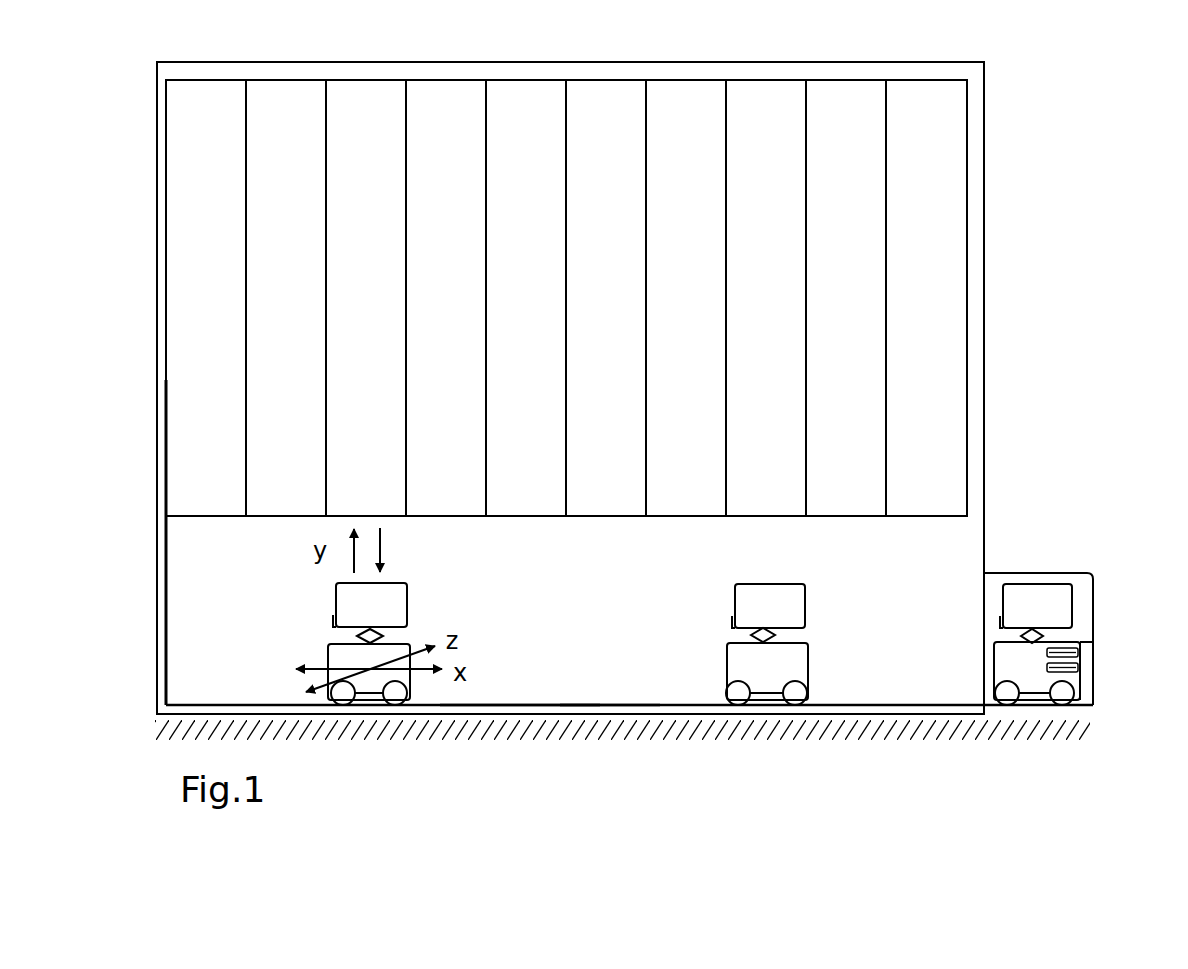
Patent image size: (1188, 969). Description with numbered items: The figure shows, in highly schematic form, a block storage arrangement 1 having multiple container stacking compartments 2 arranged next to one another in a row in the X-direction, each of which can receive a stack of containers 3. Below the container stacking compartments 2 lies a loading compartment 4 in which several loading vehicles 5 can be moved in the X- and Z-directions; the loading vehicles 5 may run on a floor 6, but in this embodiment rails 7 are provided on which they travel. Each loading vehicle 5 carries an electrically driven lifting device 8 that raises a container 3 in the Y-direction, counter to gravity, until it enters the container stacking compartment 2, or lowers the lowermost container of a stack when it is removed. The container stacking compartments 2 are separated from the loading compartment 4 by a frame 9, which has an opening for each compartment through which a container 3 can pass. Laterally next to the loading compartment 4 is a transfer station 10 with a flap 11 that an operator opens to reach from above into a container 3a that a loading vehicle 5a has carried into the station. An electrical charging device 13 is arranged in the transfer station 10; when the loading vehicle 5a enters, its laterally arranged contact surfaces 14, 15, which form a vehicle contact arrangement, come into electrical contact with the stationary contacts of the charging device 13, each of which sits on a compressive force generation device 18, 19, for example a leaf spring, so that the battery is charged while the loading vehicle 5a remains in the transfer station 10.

The block storage arrangement 1 is at (1012, 166).
The container stacking compartment 2 is at (940, 207).
The container 3 is at (385, 605).
The container 3a is at (1020, 603).
The loading compartment 4 is at (858, 637).
The loading vehicle 5 is at (370, 683).
The loading vehicle 5a is at (978, 700).
The floor 6 is at (594, 703).
The rails 7 is at (515, 703).
The lifting device 8 is at (760, 633).
The frame 9 is at (913, 513).
The transfer station 10 is at (1088, 578).
The flap 11 is at (1028, 570).
The electrical charging device 13 is at (1085, 645).
The contact surface 14 is at (1027, 700).
The contact surface 15 is at (1050, 700).
The compressive force generation device 18 is at (1090, 653).
The compressive force generation device 19 is at (1090, 665).